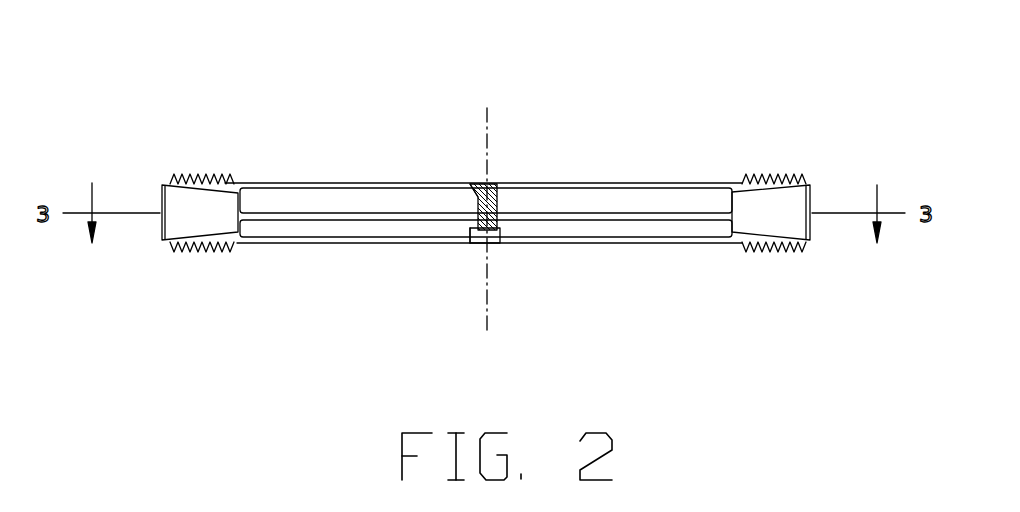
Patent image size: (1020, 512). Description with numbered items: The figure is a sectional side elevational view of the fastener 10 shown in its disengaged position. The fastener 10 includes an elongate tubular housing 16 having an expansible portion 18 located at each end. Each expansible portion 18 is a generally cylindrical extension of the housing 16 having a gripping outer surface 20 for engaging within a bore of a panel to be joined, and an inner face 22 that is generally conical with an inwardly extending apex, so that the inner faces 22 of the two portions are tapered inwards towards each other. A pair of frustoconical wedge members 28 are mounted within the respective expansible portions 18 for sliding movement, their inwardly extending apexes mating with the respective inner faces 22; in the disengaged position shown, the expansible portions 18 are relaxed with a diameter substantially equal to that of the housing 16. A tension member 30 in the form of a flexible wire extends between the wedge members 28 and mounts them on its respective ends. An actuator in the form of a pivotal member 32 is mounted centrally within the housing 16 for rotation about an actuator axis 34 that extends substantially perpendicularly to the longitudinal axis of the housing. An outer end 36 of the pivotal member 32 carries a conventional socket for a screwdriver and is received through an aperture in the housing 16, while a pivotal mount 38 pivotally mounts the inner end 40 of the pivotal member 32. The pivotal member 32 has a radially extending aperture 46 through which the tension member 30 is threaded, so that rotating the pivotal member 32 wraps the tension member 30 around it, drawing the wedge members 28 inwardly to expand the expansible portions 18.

The fastener 10 is at (484, 180).
The elongate tubular housing 16 is at (483, 258).
The expansible portion 18 is at (507, 258).
The gripping outer surface 20 is at (517, 139).
The inner face 22 is at (492, 206).
The wedge member 28 is at (456, 238).
The tension member 30 is at (486, 178).
The pivotal member 32 is at (360, 266).
The actuator axis 34 is at (511, 192).
The outer end 36 is at (510, 186).
The pivotal mount 38 is at (517, 272).
The inner end 40 is at (444, 289).
The radially extending aperture 46 is at (462, 146).